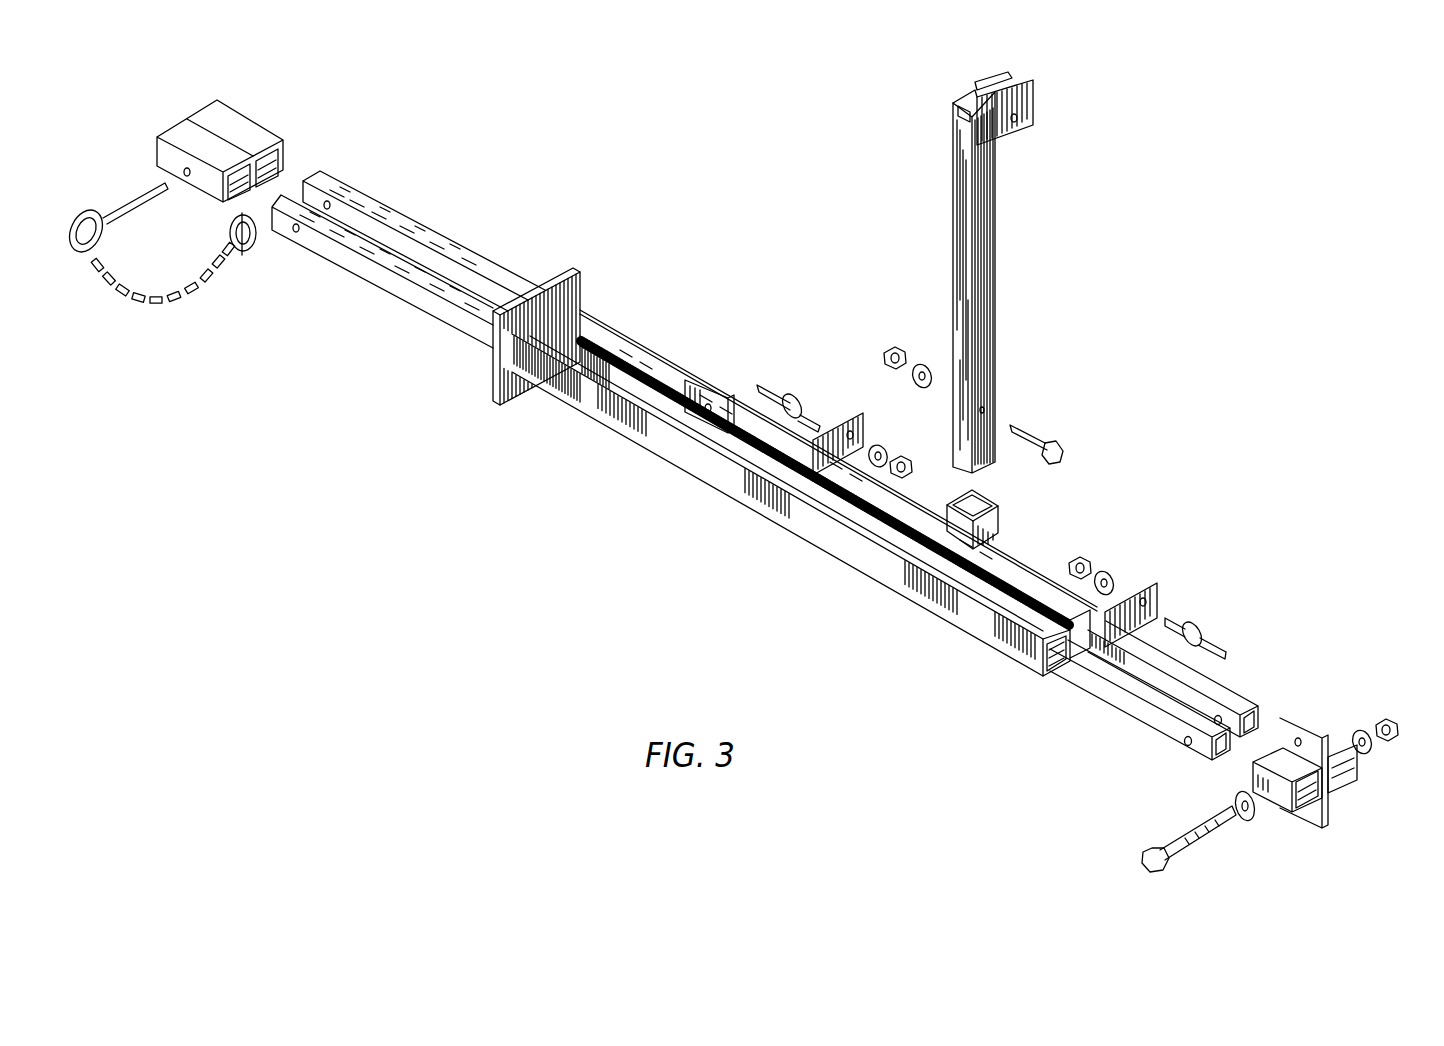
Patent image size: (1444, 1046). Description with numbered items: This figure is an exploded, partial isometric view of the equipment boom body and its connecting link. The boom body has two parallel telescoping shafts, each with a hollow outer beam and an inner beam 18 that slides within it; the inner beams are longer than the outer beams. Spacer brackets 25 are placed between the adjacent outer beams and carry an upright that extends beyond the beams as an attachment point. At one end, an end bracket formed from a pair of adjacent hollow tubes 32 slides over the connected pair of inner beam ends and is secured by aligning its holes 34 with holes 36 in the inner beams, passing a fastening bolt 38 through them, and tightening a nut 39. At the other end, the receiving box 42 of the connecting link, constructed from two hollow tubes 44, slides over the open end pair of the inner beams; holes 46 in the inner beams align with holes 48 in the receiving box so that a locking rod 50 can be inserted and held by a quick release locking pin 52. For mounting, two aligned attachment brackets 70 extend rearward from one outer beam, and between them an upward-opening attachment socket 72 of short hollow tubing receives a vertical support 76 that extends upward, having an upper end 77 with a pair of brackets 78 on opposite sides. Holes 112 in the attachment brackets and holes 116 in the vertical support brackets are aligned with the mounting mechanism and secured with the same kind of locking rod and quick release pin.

The inner beam 18 is at (447, 242).
The spacer bracket 25 is at (710, 380).
The hollow tube 32 is at (1323, 736).
The aligned holes 34 is at (1276, 795).
The aligned holes 36 is at (1183, 742).
The fastening bolt 38 is at (1140, 862).
The nut 39 is at (1388, 722).
The receiving box 42 is at (232, 146).
The hollow tube 44 is at (236, 122).
The aligned holes 46 is at (296, 233).
The aligned holes 48 is at (185, 178).
The locking rod 50 is at (132, 193).
The quick release locking pin 52 is at (232, 232).
The attachment bracket 70 is at (868, 425).
The attachment socket 72 is at (1000, 522).
The vertical support 76 is at (993, 289).
The upper end 77 is at (968, 100).
The bracket 78 is at (990, 86).
The holes 112 is at (855, 438).
The holes 116 is at (1018, 121).